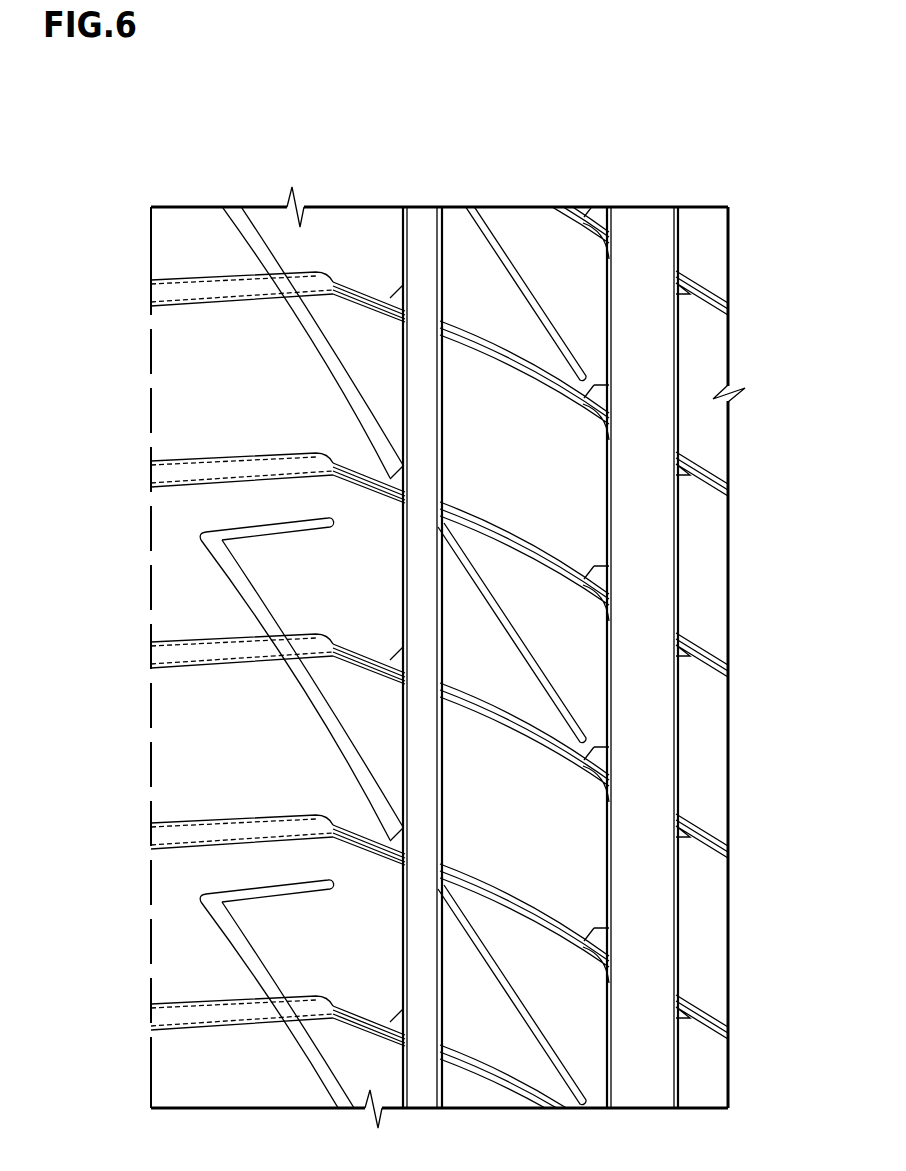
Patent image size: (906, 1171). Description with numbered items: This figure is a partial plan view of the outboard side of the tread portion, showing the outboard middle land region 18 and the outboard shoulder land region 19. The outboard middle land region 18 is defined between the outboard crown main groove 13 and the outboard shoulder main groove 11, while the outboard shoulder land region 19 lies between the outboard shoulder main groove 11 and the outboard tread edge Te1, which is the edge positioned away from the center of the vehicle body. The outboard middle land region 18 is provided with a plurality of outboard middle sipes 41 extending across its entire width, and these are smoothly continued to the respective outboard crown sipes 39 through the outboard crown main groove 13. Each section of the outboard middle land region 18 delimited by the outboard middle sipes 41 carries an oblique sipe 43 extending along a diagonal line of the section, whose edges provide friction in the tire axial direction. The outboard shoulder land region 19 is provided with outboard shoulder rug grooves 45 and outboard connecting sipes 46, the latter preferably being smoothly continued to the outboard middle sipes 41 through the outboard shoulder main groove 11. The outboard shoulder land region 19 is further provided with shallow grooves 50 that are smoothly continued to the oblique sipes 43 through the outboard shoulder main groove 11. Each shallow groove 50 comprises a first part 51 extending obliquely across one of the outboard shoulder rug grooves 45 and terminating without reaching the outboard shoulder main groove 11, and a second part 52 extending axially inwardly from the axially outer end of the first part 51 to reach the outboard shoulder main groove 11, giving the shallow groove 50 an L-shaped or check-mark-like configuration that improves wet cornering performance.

The outboard tread edge Te1 is at (150, 235).
The outboard shoulder main groove 11 is at (421, 247).
The outboard crown main groove 13 is at (642, 252).
The outboard middle land region 18 is at (527, 247).
The outboard shoulder land region 19 is at (334, 243).
The outboard crown sipe 39 is at (703, 657).
The outboard middle sipe 41 is at (542, 372).
The oblique sipe 43 is at (528, 650).
The outboard shoulder rug groove 45 is at (230, 473).
The outboard connecting sipe 46 is at (366, 478).
The shallow groove 50 is at (209, 831).
The first part 51 is at (315, 703).
The second part 52 is at (263, 525).